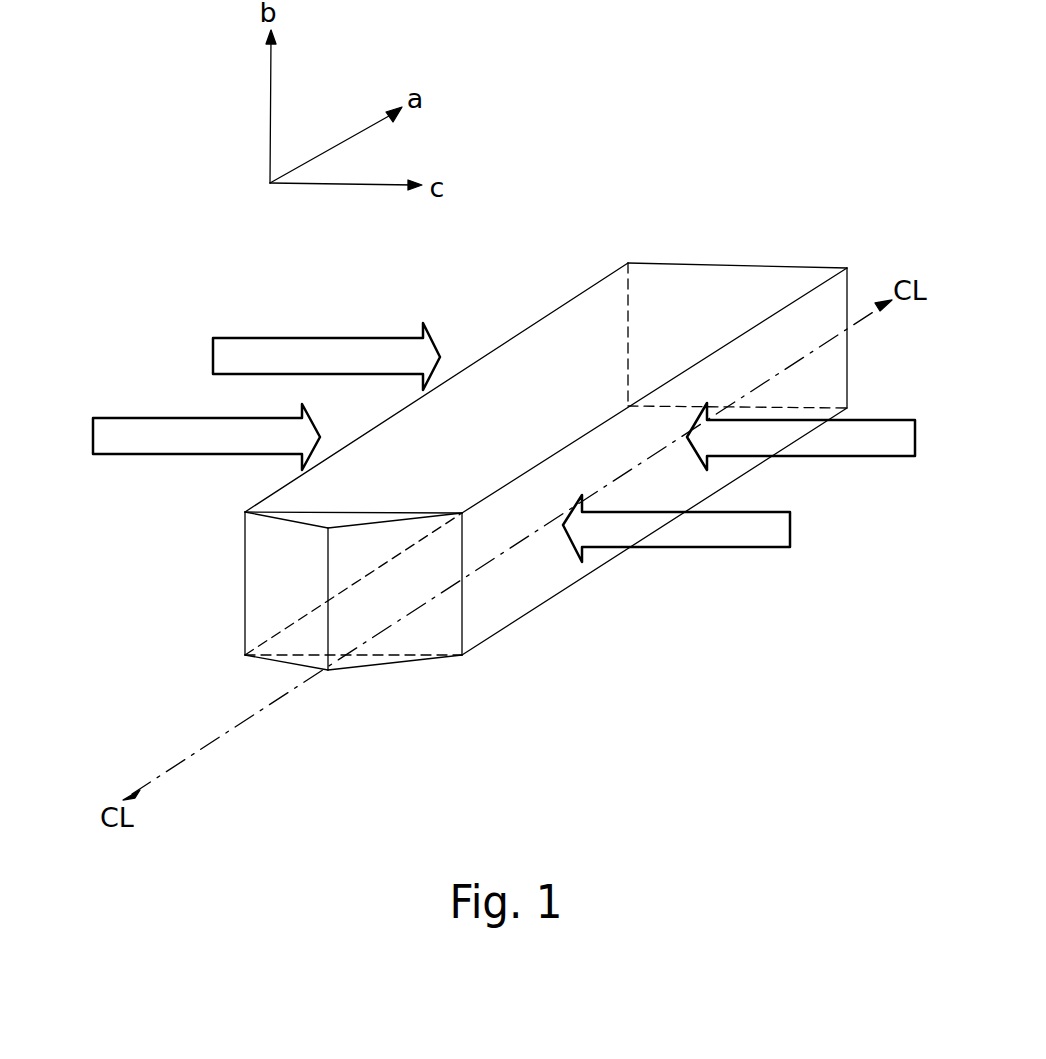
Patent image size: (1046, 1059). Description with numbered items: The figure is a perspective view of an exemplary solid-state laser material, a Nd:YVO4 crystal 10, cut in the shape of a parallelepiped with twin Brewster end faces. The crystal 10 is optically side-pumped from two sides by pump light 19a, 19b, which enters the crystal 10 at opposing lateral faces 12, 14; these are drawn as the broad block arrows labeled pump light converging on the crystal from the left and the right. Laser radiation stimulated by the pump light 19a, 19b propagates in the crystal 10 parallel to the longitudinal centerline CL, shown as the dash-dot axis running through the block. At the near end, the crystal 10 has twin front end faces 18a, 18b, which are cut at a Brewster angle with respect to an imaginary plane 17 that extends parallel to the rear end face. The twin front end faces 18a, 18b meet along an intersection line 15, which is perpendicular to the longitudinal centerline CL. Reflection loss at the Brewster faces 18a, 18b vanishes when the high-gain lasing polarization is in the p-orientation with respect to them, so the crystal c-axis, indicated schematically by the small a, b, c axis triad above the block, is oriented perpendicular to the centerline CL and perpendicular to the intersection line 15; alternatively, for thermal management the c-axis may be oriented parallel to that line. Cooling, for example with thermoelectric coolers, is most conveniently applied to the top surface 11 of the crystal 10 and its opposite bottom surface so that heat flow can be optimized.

The crystal 10 is at (610, 603).
The top surface 11 is at (750, 270).
The lateral face 12 is at (513, 347).
The lateral face 14 is at (837, 378).
The intersection line 15 is at (328, 632).
The imaginary plane 17 is at (372, 507).
The front end face 18a is at (255, 585).
The front end face 18b is at (437, 638).
The pump light 19a is at (253, 338).
The pump light 19b is at (915, 456).